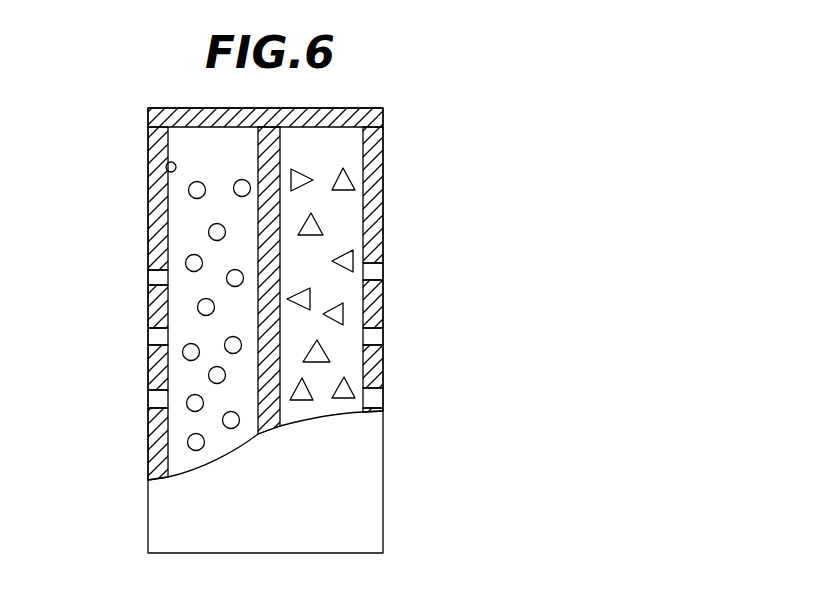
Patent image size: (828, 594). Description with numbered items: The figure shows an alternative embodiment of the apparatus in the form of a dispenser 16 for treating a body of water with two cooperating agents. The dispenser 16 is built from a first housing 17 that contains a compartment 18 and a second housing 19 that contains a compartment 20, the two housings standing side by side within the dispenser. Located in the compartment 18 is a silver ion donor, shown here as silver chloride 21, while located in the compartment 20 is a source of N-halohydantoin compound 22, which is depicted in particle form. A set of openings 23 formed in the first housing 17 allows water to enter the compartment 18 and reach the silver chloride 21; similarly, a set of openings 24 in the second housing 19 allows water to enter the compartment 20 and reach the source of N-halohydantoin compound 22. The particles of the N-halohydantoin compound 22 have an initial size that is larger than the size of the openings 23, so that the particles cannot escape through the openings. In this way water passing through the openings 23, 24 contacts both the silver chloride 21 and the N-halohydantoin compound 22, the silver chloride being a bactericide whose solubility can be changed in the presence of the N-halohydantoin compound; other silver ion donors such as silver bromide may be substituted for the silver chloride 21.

The dispenser 16 is at (370, 92).
The first housing 17 is at (158, 179).
The compartment 18 is at (198, 167).
The second housing 19 is at (360, 206).
The compartment 20 is at (308, 167).
The silver chloride 21 is at (184, 345).
The source of N-halohydantoin compound 22 is at (345, 314).
The set of openings 23 is at (147, 397).
The set of openings 24 is at (383, 394).